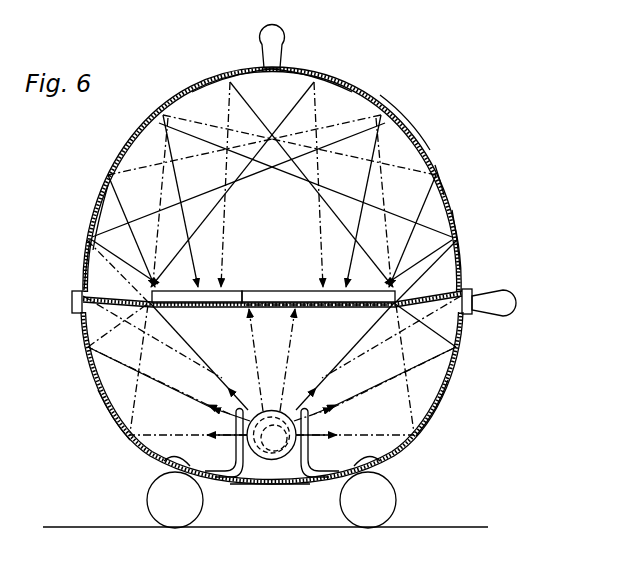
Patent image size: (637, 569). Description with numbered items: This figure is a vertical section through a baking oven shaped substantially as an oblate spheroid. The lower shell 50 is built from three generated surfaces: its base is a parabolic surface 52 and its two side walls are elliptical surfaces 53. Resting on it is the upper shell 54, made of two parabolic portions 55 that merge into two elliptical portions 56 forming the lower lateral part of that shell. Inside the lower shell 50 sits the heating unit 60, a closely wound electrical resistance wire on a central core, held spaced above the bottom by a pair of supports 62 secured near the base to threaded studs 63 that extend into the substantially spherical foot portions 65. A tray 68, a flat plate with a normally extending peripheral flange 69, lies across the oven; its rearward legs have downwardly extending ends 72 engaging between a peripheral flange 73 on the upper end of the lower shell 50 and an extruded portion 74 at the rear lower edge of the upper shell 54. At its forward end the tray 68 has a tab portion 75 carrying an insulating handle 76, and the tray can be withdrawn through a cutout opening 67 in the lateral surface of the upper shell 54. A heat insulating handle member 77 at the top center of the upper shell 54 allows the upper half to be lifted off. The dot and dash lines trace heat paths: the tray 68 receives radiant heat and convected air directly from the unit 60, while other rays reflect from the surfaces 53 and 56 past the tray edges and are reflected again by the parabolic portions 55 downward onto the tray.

The lower shell 50 is at (92, 383).
The parabolic surface 52 is at (272, 486).
The elliptical surfaces 53 is at (108, 418).
The upper shell 54 is at (423, 143).
The parabolic portions 55 is at (194, 94).
The elliptical portions 56 is at (102, 187).
The heating unit 60 is at (268, 449).
The supports 62 is at (238, 446).
The threaded studs 63 is at (168, 464).
The foot portions 65 is at (385, 492).
The cutout opening 67 is at (438, 178).
The tray 68 is at (213, 305).
The peripheral flange 69 is at (398, 292).
The downwardly extending ends 72 is at (72, 308).
The peripheral flange 73 is at (82, 320).
The extruded portion 74 is at (78, 268).
The tab portion 75 is at (462, 290).
The insulating handle 76 is at (514, 310).
The heat insulating handle member 77 is at (290, 45).